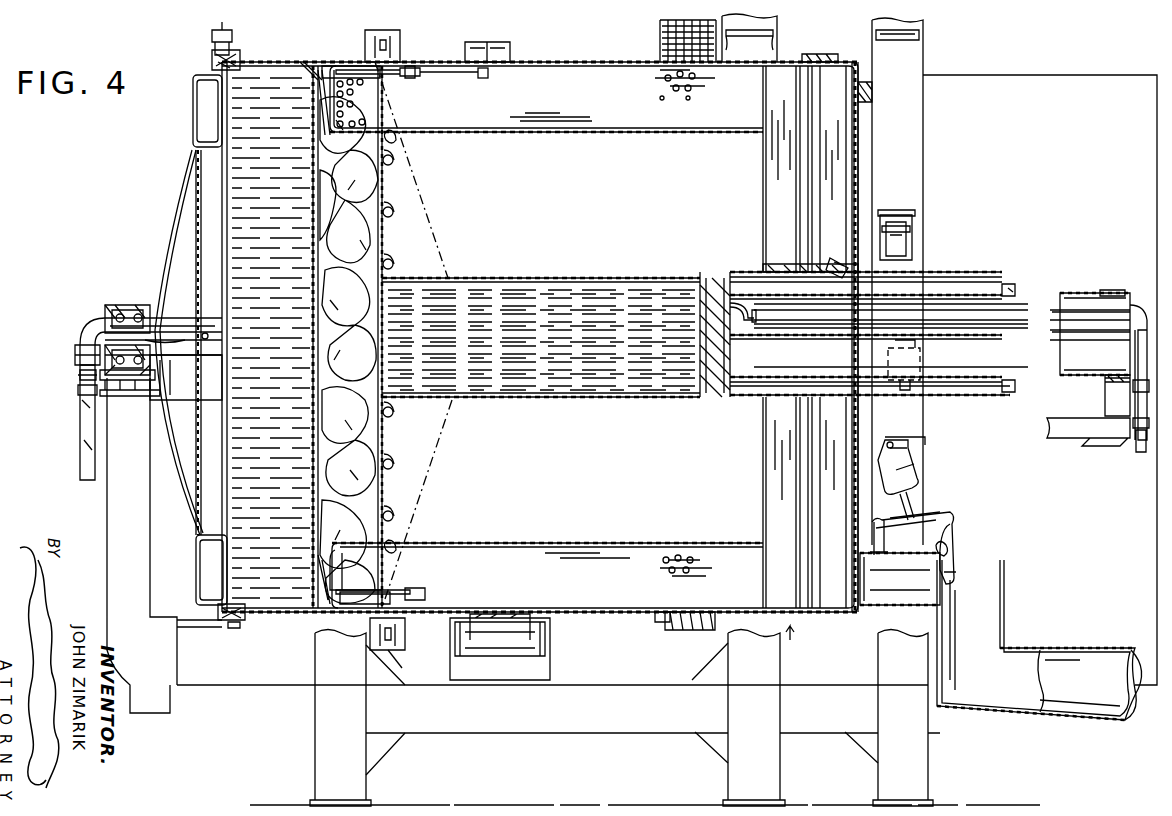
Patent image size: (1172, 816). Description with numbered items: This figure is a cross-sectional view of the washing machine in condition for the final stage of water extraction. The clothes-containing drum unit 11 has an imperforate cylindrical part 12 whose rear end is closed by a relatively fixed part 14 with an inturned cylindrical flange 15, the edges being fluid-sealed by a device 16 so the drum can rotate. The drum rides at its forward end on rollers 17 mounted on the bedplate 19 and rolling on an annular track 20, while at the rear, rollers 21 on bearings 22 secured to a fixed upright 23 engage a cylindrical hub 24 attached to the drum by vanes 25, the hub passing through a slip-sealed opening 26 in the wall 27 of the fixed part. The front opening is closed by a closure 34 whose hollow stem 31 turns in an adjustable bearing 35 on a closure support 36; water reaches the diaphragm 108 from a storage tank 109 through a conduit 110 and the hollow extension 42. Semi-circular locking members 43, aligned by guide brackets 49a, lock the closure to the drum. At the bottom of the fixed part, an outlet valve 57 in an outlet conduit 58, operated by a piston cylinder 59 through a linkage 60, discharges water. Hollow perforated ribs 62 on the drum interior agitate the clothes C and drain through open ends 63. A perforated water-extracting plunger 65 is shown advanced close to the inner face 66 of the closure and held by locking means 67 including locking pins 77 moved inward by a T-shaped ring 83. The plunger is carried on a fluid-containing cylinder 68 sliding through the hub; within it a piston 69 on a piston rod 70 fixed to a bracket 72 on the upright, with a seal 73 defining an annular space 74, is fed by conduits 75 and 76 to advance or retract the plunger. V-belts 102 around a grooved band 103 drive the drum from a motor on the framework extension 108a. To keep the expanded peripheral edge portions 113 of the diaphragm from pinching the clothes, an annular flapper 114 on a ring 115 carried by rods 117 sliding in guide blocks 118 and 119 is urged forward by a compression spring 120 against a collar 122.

The clothes-containing drum unit 11 is at (798, 636).
The imperforate cylindrical part 12 is at (568, 64).
The relatively fixed part 14 is at (860, 134).
The inturned cylindrical flange 15 is at (822, 68).
The sealing device 16 is at (817, 54).
The rollers 17 is at (490, 646).
The bedplate 19 is at (568, 720).
The annular track 20 is at (502, 44).
The rollers 21 is at (922, 358).
The bearings 22 is at (916, 230).
The fixed upright 23 is at (924, 101).
The cylindrical hub 24 is at (765, 275).
The vanes 25 is at (762, 211).
The slip-sealed opening 26 is at (810, 266).
The wall 27 is at (848, 164).
The hollow stem 31 is at (186, 352).
The closure 34 is at (193, 106).
The adjustable bearing 35 is at (130, 300).
The closure support 36 is at (107, 500).
The hollow extension 42 is at (94, 330).
The locking members 43 is at (240, 40).
The guide brackets 49a is at (214, 34).
The outlet valve 57 is at (944, 596).
The outlet conduit 58 is at (1010, 714).
The fluid-pressure actuated piston cylinder 59 is at (916, 470).
The linkage 60 is at (926, 506).
The clothes-agitating ribs 62 is at (672, 138).
The open ends 63 is at (766, 96).
The perforated water-extracting plunger 65 is at (387, 228).
The inner face 66 is at (232, 480).
The locking means 67 is at (394, 465).
The fluid-containing cylinder 68 is at (636, 278).
The piston 69 is at (696, 400).
The piston rod 70 is at (1090, 294).
The fixed bracket 72 is at (1105, 402).
The fluid seal 73 is at (1005, 288).
The annular fluid-containing space 74 is at (990, 396).
The conduit 75 is at (1124, 446).
The conduit 76 is at (1134, 306).
The locking pins 77 is at (398, 48).
The T-shaped ring 83 is at (399, 661).
The V-belts 102 is at (660, 40).
The grooved annular band 103 is at (660, 622).
The diaphragm 108 is at (300, 285).
The upper extension 108a is at (924, 28).
The storage tank 109 is at (1022, 76).
The conduit 110 is at (80, 458).
The peripheral edge portions 113 is at (300, 620).
The annular flapper 114 is at (336, 594).
The annular ring 115 is at (300, 68).
The metal rods 117 is at (342, 64).
The guide block 118 is at (312, 60).
The guide block 119 is at (424, 74).
The compression spring 120 is at (424, 80).
The collar 122 is at (485, 80).
The wet clothes C is at (400, 180).